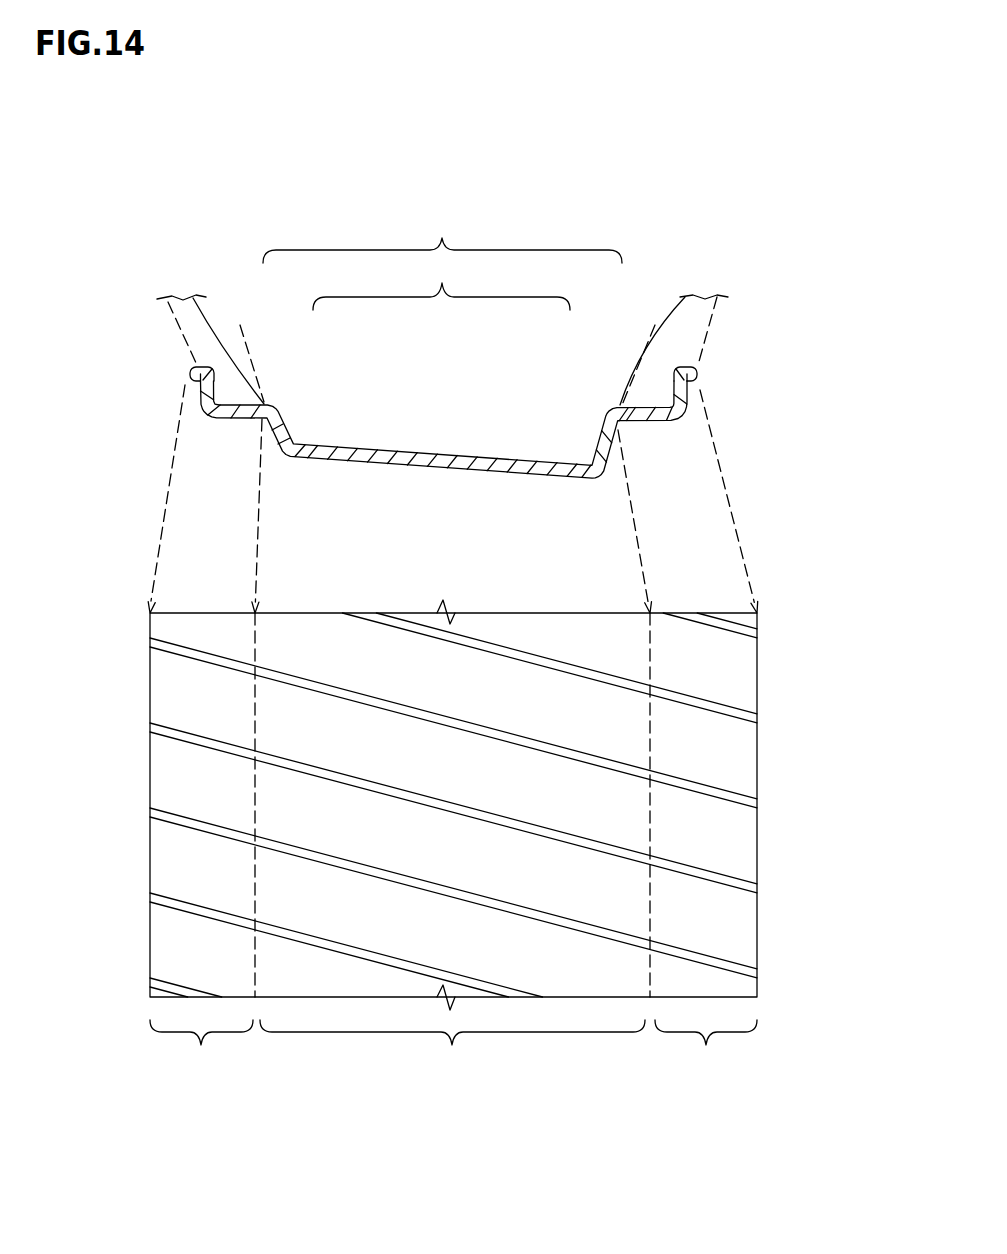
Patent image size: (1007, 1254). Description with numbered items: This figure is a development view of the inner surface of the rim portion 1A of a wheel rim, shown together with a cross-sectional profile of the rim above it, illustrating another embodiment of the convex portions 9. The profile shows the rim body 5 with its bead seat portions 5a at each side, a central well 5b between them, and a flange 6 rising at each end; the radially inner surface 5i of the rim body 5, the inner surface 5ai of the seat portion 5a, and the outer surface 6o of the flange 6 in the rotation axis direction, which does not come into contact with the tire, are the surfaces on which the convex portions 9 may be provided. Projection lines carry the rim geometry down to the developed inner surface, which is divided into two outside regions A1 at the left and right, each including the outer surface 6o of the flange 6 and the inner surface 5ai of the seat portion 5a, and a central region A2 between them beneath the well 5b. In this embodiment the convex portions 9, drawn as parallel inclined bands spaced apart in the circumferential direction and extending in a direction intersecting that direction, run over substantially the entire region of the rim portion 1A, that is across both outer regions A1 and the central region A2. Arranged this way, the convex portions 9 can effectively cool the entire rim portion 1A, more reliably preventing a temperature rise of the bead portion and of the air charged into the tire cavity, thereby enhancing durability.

The rim portion 1A is at (525, 638).
The rim body 5 is at (394, 408).
The seat portion 5a is at (253, 400).
The well (drop center) 5b is at (445, 457).
The inner surface of the rim body 5i is at (360, 462).
The inner surface of the seat portion 5ai is at (248, 422).
The flange 6 is at (210, 372).
The outer surface of the flange 6o is at (199, 386).
The convex portions 9 is at (183, 655).
The outside regions A1 is at (453, 1048).
The central region A2 is at (452, 1048).